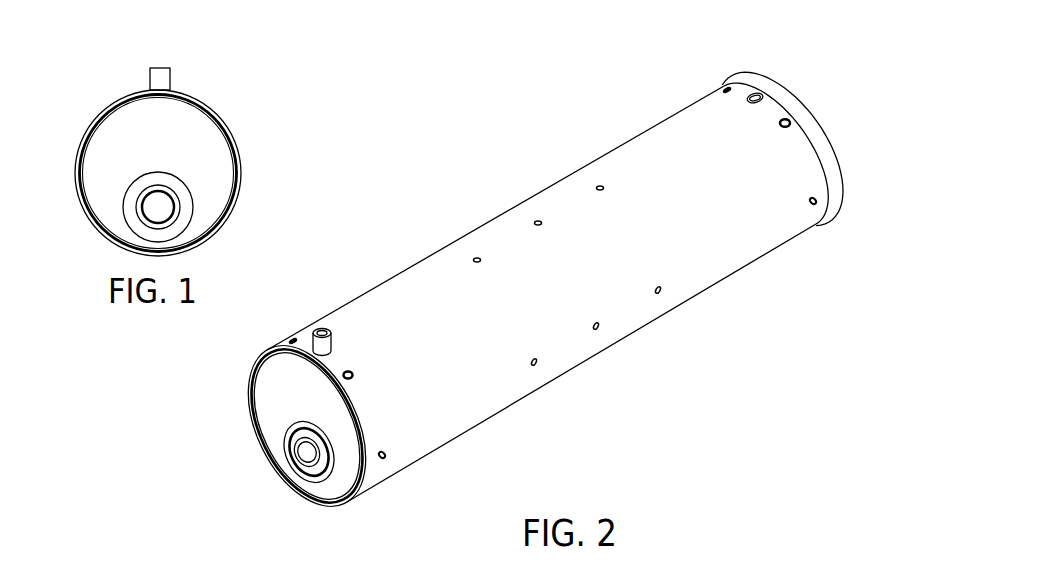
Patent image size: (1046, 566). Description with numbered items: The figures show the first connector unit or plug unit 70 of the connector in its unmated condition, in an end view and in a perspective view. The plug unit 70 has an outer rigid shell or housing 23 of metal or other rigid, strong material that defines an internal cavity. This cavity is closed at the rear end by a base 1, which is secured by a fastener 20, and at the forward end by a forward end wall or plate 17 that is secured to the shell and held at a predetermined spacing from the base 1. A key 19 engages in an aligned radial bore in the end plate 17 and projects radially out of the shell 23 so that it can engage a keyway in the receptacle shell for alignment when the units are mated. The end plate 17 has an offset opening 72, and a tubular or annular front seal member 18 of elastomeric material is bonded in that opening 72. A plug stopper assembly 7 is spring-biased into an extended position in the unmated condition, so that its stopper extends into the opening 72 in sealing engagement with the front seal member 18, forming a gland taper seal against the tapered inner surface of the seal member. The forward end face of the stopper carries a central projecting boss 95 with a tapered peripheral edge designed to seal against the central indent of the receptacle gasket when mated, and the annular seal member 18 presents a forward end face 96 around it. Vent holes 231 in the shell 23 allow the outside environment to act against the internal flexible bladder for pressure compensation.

In FIG. 2, the base 1 is at (802, 102).
In FIG. 1, the plug stopper assembly 7 is at (178, 208).
In FIG. 1, the forward end wall or plate 17 is at (187, 130).
In FIG. 2, the forward end wall or plate 17 is at (282, 395).
In FIG. 1, the front seal member 18 is at (175, 182).
In FIG. 2, the front seal member 18 is at (327, 475).
In FIG. 1, the key 19 is at (163, 80).
In FIG. 2, the key 19 is at (322, 328).
In FIG. 2, the fastener 20 is at (384, 458).
In FIG. 1, the outer rigid shell or housing 23 is at (102, 113).
In FIG. 2, the outer rigid shell or housing 23 is at (497, 230).
In FIG. 2, the first connector unit or plug unit 70 is at (589, 415).
In FIG. 2, the offset opening 72 is at (317, 488).
In FIG. 2, the central projecting boss 95 is at (303, 457).
In FIG. 2, the forward end face 96 is at (297, 480).
In FIG. 2, the vent holes 231 is at (660, 293).